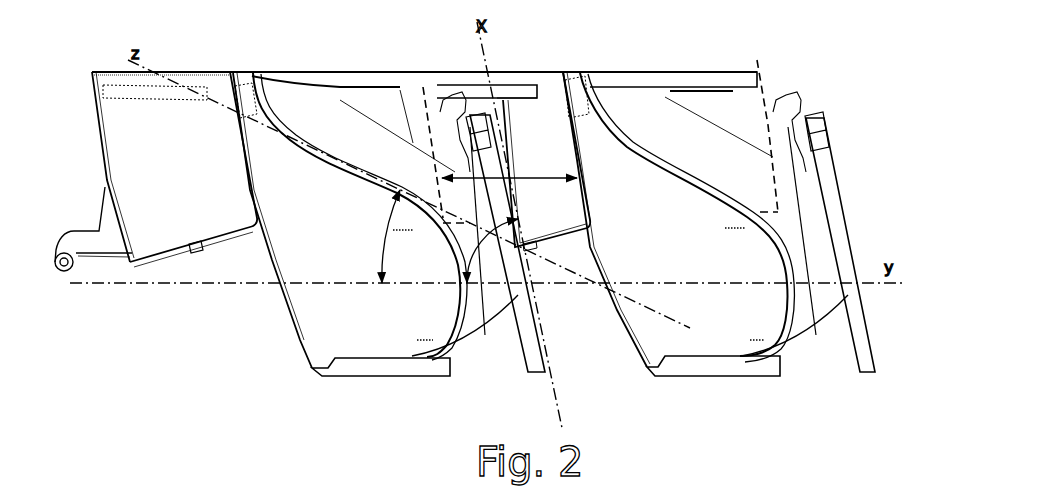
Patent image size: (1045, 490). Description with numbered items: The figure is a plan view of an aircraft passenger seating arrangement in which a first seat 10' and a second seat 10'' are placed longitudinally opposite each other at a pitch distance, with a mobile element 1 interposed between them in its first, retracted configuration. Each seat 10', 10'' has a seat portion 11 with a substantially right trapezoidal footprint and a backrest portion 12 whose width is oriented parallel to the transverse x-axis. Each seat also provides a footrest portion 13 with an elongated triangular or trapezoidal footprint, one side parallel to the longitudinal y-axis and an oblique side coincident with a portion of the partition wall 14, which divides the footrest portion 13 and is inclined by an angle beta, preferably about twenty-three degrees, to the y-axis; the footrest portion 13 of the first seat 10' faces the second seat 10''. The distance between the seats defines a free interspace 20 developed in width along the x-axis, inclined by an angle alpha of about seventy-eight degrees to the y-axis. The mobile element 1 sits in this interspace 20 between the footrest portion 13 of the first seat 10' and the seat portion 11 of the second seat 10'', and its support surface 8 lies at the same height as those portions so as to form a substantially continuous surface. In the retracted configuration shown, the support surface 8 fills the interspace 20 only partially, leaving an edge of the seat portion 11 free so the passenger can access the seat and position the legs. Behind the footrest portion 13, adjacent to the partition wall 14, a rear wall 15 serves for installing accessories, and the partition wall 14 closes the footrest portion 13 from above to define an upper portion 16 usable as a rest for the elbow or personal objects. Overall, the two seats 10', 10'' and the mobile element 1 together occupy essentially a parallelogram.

The mobile element 1 is at (130, 157).
The support surface 8 is at (150, 232).
The first seat 10' is at (341, 193).
The second seat 10'' is at (684, 183).
The seat portion 11 is at (340, 330).
The backrest portion 12 is at (450, 340).
The footrest portion 13 is at (381, 190).
The partition wall 14 is at (333, 157).
The rear wall 15 is at (487, 347).
The upper portion 16 is at (350, 100).
The interspace 20 is at (565, 260).